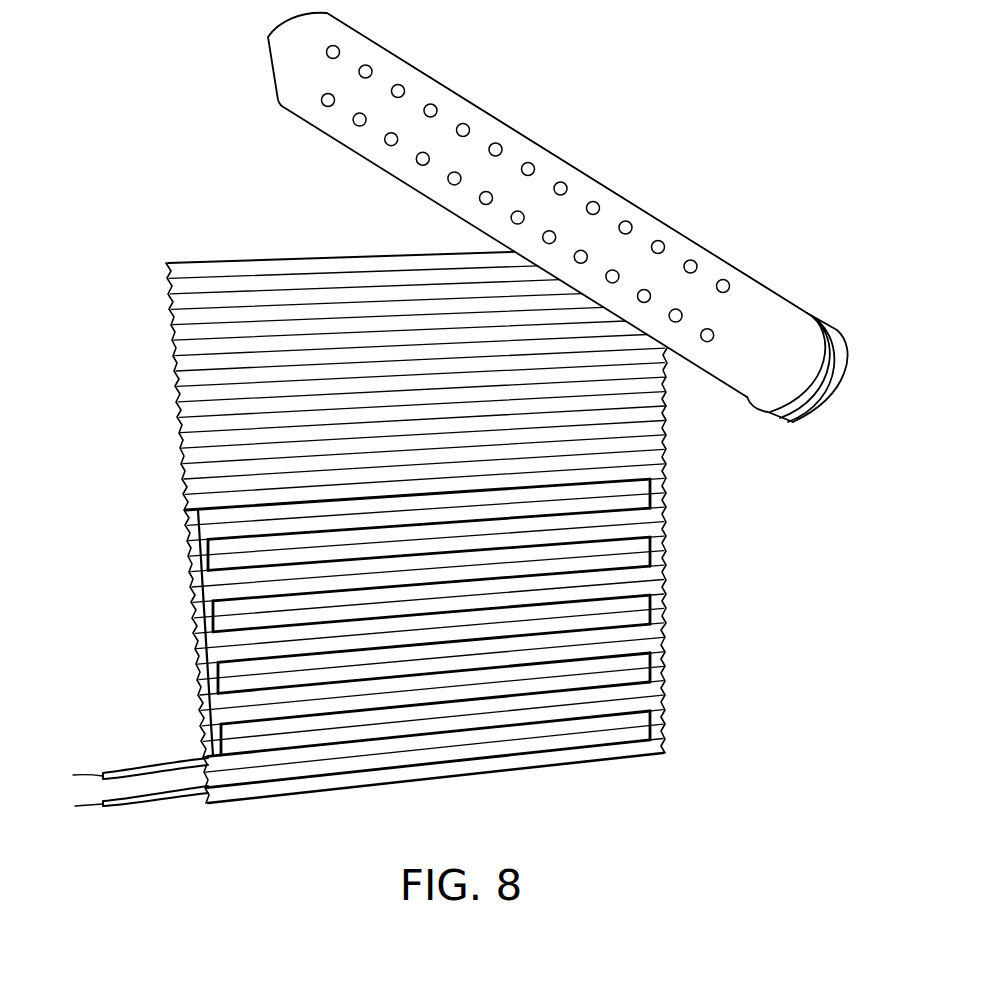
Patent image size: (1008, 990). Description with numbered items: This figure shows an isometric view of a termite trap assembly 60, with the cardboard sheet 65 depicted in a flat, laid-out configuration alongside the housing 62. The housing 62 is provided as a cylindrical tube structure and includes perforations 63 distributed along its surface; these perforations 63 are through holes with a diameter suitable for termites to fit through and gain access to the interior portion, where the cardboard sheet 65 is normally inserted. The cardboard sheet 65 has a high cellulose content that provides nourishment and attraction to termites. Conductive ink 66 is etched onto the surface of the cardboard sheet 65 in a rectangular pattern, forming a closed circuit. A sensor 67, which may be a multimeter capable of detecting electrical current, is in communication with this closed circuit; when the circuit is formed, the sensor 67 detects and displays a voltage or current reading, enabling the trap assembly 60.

The termite trap assembly 60 is at (558, 217).
The housing 62 is at (490, 182).
The perforations 63 is at (416, 160).
The cardboard sheet 65 is at (187, 318).
The conductive ink 66 is at (190, 533).
The sensor 67 is at (147, 768).